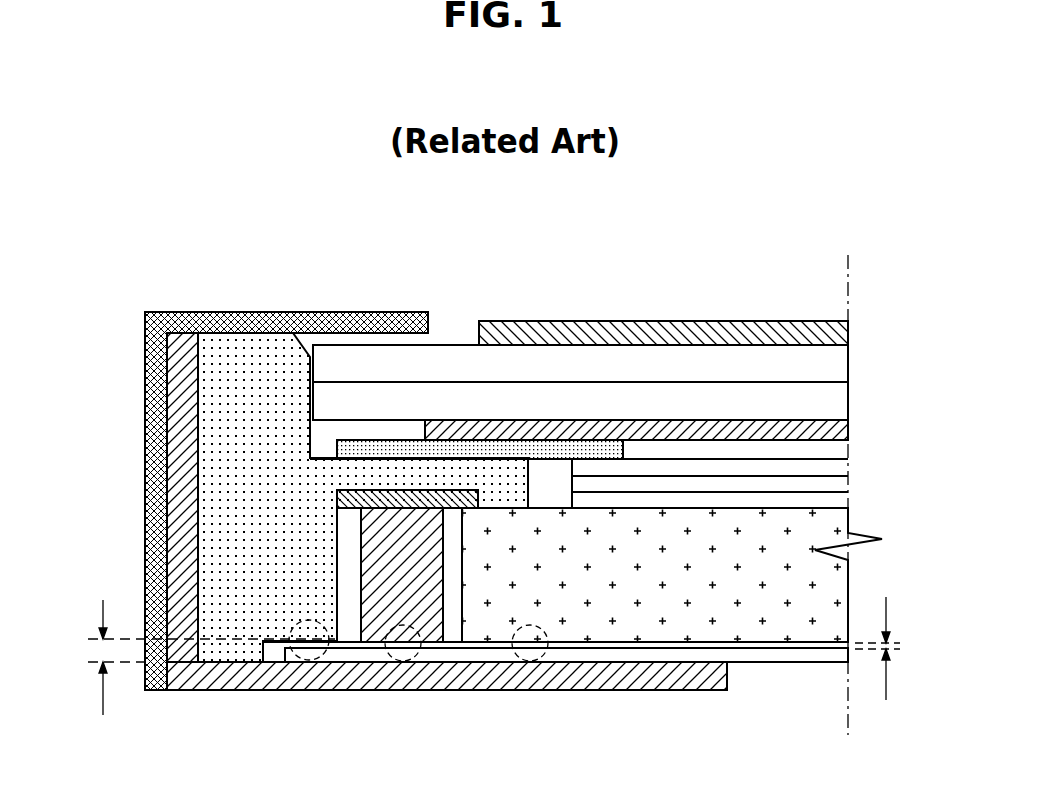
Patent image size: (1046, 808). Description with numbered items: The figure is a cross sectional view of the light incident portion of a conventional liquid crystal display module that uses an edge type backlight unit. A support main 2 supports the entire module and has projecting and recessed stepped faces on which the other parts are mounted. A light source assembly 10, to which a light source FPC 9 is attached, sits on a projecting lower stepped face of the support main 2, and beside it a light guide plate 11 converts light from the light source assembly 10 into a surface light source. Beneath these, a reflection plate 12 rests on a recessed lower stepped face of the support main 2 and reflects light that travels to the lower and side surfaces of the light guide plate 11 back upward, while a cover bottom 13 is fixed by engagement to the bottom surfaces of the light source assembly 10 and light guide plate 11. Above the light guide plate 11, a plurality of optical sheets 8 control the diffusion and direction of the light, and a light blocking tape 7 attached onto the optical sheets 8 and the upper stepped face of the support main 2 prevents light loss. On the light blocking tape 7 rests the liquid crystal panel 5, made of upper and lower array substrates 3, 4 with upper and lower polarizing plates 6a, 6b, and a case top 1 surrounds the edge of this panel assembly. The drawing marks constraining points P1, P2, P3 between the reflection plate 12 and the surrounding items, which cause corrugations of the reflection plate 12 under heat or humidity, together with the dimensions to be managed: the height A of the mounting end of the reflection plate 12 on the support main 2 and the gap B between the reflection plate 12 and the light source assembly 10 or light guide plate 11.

The case top 1 is at (157, 342).
The support main 2 is at (215, 400).
The upper array substrate 3 is at (838, 361).
The lower array substrate 4 is at (838, 403).
The liquid crystal panel 5 is at (634, 382).
The upper polarizing plate 6a is at (838, 330).
The lower polarizing plate 6b is at (838, 432).
The light blocking tape 7 is at (343, 450).
The optical sheets 8 is at (862, 459).
The light source FPC 9 is at (335, 493).
The light source assembly 10 is at (378, 541).
The light guide plate 11 is at (835, 572).
The reflection plate 12 is at (773, 662).
The cover bottom 13 is at (607, 690).
The constraining point P1 is at (305, 662).
The constraining point P2 is at (400, 662).
The constraining point P3 is at (530, 662).
The height of the mounting end of the reflection plate A is at (209, 657).
The gap B is at (881, 648).